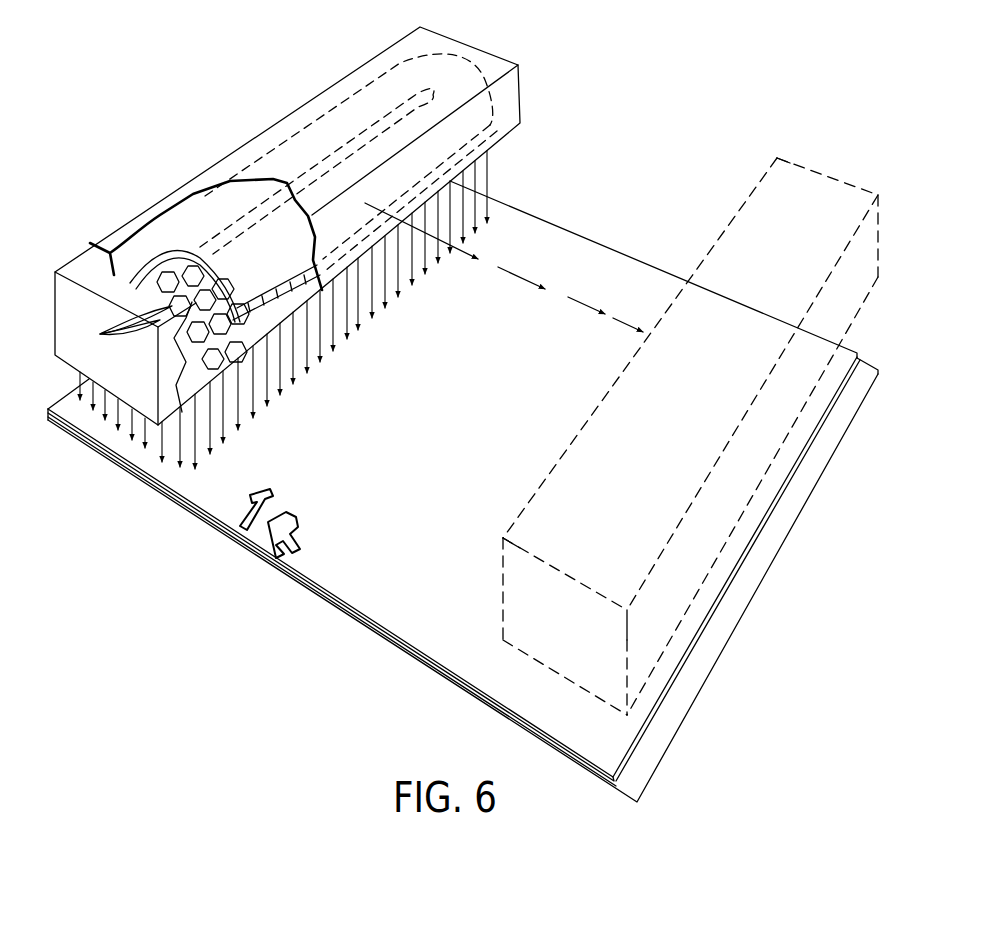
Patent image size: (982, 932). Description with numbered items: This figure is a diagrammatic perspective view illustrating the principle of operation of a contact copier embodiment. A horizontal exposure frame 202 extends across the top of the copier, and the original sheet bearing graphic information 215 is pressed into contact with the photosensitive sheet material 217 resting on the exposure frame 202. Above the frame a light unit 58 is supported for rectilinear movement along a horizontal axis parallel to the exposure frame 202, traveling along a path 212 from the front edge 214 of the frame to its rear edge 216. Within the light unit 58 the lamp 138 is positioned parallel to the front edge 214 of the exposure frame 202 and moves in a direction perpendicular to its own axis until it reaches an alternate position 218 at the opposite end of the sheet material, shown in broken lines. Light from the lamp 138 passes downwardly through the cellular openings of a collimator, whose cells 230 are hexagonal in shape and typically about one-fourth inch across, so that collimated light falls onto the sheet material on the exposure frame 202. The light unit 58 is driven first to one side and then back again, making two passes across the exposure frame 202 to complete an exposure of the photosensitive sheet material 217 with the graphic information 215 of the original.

The light unit 58 is at (268, 121).
The lamp 138 is at (173, 268).
The cells 230 is at (117, 328).
The exposure frame 202 is at (540, 210).
The path 212 is at (577, 302).
The alternate position 218 is at (793, 158).
The rear edge 216 is at (748, 580).
The front edge 214 is at (50, 409).
The photosensitive sheet material 217 is at (643, 763).
The graphic information 215 is at (268, 500).